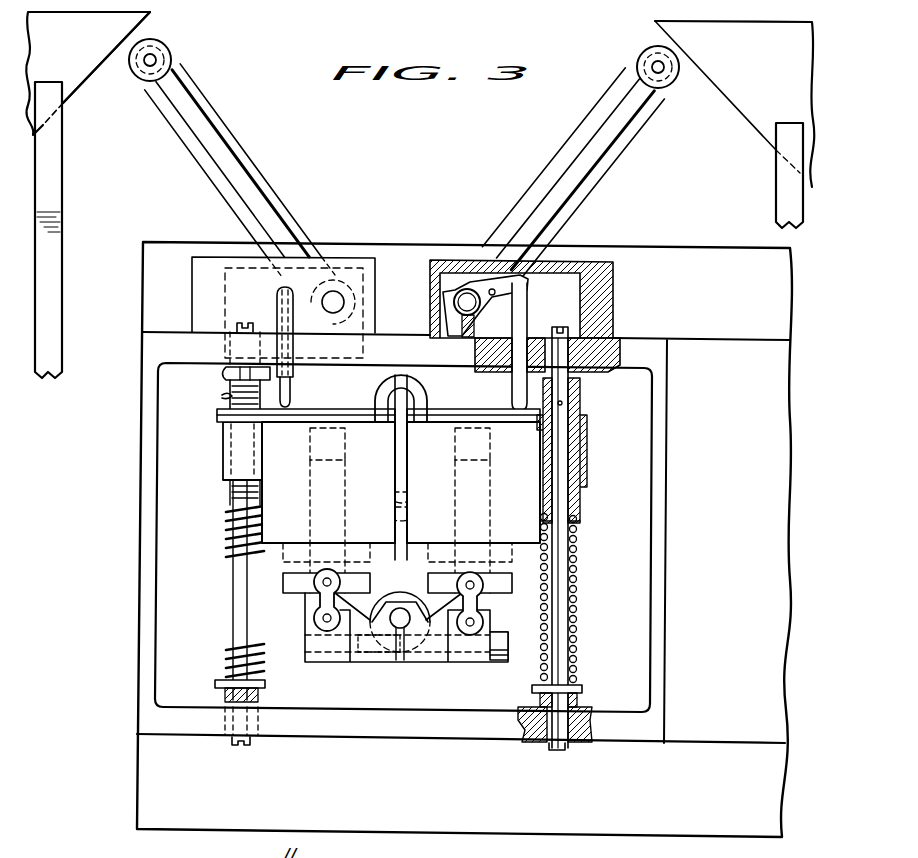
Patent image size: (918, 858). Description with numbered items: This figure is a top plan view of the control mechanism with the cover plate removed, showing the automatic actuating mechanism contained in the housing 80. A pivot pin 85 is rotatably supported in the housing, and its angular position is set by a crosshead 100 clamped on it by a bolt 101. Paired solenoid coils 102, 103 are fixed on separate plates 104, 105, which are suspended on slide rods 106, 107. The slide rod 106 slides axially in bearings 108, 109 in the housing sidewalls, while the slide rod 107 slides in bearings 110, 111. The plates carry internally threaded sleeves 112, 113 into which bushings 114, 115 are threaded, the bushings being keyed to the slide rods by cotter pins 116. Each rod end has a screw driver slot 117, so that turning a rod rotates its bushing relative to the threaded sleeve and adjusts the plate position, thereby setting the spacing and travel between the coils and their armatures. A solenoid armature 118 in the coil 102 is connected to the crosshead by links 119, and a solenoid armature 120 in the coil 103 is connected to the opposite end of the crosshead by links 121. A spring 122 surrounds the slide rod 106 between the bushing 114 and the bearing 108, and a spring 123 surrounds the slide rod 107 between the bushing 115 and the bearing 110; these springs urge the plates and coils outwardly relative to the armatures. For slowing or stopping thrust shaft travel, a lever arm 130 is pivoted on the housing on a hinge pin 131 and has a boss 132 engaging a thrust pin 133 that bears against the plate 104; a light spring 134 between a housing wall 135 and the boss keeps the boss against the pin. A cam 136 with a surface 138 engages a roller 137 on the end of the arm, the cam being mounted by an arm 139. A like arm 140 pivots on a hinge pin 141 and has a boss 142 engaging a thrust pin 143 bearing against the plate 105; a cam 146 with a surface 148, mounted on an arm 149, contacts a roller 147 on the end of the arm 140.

The housing 80 is at (668, 546).
The pivot pin 85 is at (406, 661).
The crosshead 100 is at (470, 662).
The bolt 101 is at (494, 662).
The solenoid coil 102 is at (528, 486).
The solenoid coil 103 is at (300, 486).
The plate 104 is at (475, 418).
The plate 105 is at (335, 418).
The slide rod 106 is at (577, 574).
The slide rod 107 is at (240, 587).
The bearing 108 is at (583, 689).
The bearing 109 is at (578, 384).
The bearing 110 is at (224, 690).
The bearing 111 is at (232, 364).
The internally threaded sleeve 112 is at (581, 461).
The internally threaded sleeve 113 is at (224, 437).
The bushing 114 is at (577, 521).
The bushing 115 is at (230, 498).
The cotter pin 116 is at (226, 397).
The screw driver slot 117 is at (560, 749).
The solenoid armature 118 is at (430, 590).
The link 119 is at (485, 619).
The solenoid armature 120 is at (370, 585).
The link 121 is at (318, 611).
The spring 122 is at (574, 651).
The spring 123 is at (232, 658).
The lever arm 130 is at (561, 162).
The hinge pin 131 is at (455, 306).
The boss 132 is at (526, 283).
The thrust pin 133 is at (527, 313).
The light spring 134 is at (474, 280).
The housing wall 135 is at (560, 262).
The cam 136 is at (790, 86).
The roller 137 is at (636, 72).
The surface 138 is at (734, 112).
The arm 139 is at (778, 183).
The arm 140 is at (274, 197).
The hinge pin 141 is at (345, 304).
The boss 142 is at (300, 283).
The thrust pin 143 is at (279, 320).
The cam 146 is at (88, 73).
The roller 147 is at (164, 46).
The surface 148 is at (93, 85).
The arm 149 is at (60, 214).